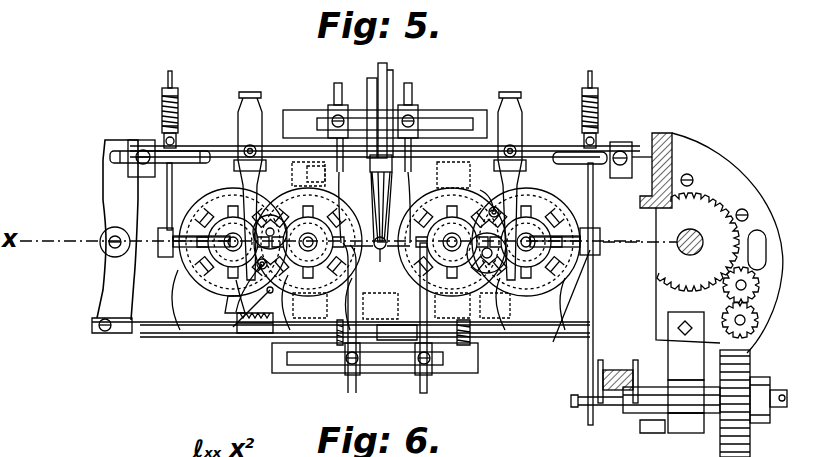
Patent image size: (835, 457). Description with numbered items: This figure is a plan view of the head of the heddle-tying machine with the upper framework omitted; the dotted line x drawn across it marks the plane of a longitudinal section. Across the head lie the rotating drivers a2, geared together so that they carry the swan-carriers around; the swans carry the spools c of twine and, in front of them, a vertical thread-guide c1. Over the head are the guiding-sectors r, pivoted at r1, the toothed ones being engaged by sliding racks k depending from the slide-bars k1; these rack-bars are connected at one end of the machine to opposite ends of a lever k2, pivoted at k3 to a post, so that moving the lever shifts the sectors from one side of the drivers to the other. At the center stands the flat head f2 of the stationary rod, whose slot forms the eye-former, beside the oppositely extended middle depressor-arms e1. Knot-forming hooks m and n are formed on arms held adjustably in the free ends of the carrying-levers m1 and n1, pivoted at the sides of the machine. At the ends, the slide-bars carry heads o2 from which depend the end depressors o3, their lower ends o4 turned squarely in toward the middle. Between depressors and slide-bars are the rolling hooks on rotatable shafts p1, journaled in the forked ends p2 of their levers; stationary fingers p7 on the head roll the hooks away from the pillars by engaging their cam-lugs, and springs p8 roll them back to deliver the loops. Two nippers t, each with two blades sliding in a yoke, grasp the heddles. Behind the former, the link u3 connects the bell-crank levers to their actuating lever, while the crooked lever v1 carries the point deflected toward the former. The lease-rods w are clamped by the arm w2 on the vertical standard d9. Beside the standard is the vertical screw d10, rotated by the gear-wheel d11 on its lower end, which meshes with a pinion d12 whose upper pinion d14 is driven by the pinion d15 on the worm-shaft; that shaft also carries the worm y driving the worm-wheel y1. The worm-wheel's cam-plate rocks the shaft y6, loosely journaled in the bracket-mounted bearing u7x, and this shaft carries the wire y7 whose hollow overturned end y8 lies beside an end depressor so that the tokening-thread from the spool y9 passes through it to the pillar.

The lever k2 is at (112, 207).
The pivot k3 is at (113, 243).
The slide-bars k1 is at (143, 328).
The stationary fingers p7 is at (183, 156).
The forked ends p2 is at (178, 92).
The springs p8 is at (178, 118).
The rotatable shafts p1 is at (172, 202).
The nippers t is at (244, 185).
The rotating drivers a2 is at (322, 250).
The knot-forming hooks m is at (379, 238).
The spools c is at (380, 246).
The thread-guide c1 is at (258, 268).
The heads o2 is at (163, 255).
The end depressors o3 is at (595, 242).
The lower ends of end depressors o4 is at (270, 192).
The arm w2 is at (295, 179).
The middle depressor-arms e1 is at (401, 240).
The link u3 is at (370, 97).
The lever v1 is at (386, 82).
The lease-rods w is at (370, 175).
The carrying-levers m1 is at (340, 107).
The carrying-levers n1 is at (453, 65).
The knot-forming hooks n is at (358, 387).
The flat head f2 is at (377, 265).
The guiding-sectors r is at (225, 327).
The pivot r1 is at (247, 333).
The sliding racks k is at (265, 295).
The overturned end of wire y8 is at (560, 306).
The vertical standard d9 is at (663, 155).
The vertical screw d10 is at (713, 230).
The gear-wheel d11 is at (705, 213).
The dotted line x x is at (703, 241).
The pinion d12 is at (727, 290).
The worm y is at (753, 333).
The second pinion d14 is at (686, 346).
The pinion d15 is at (738, 292).
The spool y9 is at (617, 376).
The wire y7 is at (588, 360).
The shaft y6 is at (628, 400).
The bearing block u7x is at (672, 413).
The worm-wheel y1 is at (747, 427).